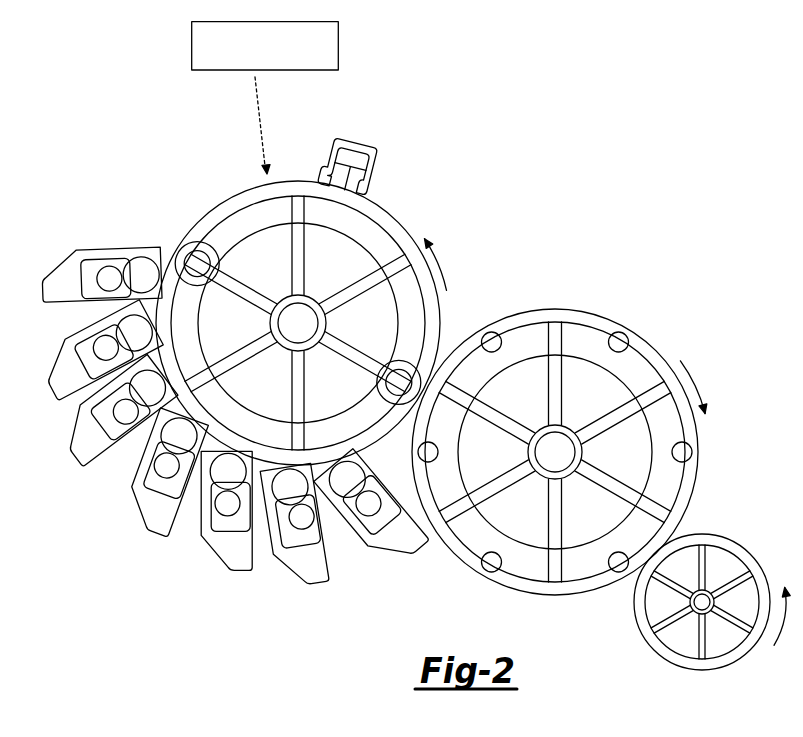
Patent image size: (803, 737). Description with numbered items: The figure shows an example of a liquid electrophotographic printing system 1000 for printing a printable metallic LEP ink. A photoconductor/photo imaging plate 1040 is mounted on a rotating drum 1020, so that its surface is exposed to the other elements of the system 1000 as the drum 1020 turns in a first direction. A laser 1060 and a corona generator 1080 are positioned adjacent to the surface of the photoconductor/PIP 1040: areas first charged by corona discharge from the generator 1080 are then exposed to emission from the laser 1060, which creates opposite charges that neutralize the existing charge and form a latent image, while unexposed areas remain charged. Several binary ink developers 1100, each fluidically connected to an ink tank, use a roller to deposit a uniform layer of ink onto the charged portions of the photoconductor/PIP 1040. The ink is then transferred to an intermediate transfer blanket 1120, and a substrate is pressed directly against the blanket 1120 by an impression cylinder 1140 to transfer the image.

The LEP printing system 1000 is at (572, 224).
The rotating drum 1020 is at (250, 257).
The photoconductor/photo imaging plate 1040 is at (236, 194).
The laser 1060 is at (191, 46).
The corona generator 1080 is at (375, 167).
The binary ink developer 1100 is at (84, 470).
The intermediate transfer blanket 1120 is at (699, 452).
The impression cylinder 1140 is at (707, 672).